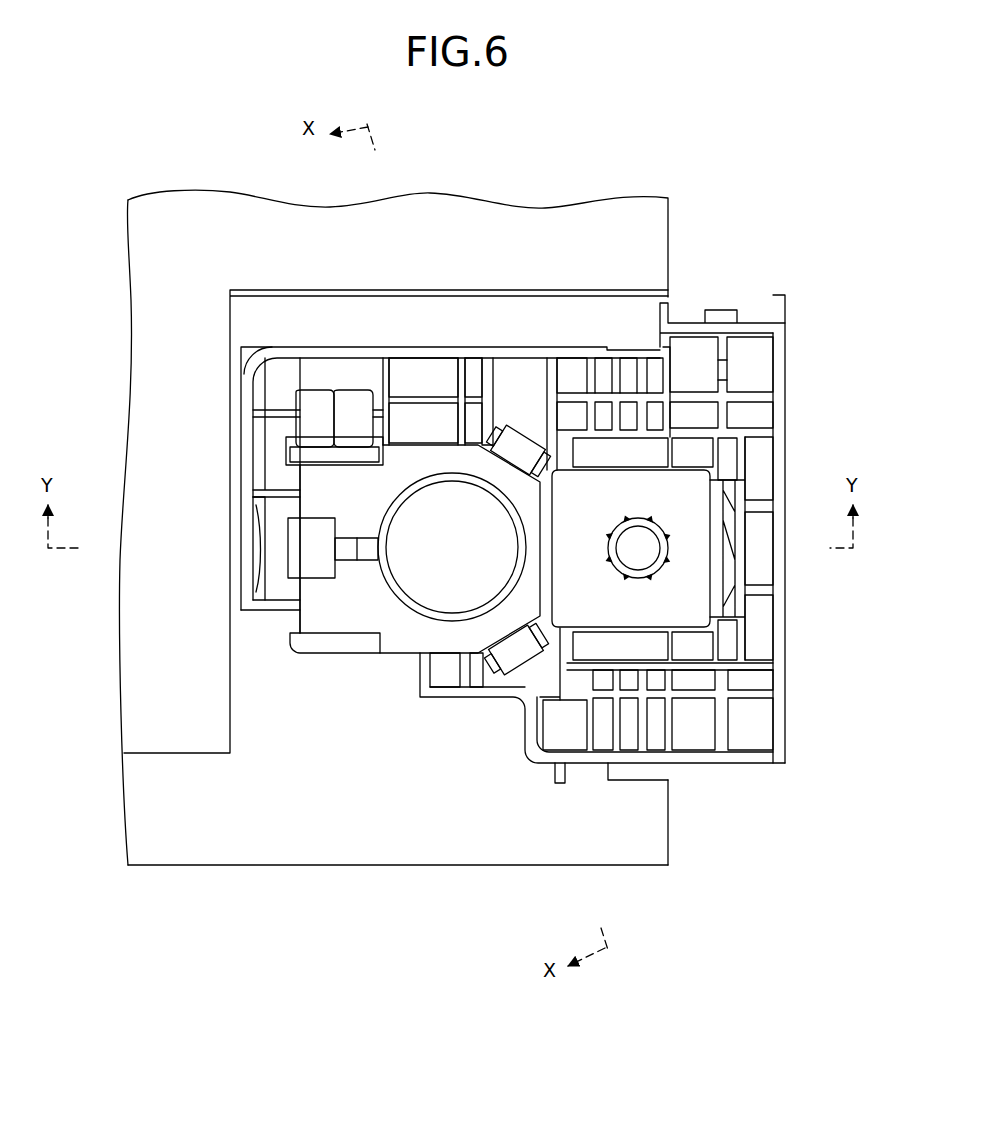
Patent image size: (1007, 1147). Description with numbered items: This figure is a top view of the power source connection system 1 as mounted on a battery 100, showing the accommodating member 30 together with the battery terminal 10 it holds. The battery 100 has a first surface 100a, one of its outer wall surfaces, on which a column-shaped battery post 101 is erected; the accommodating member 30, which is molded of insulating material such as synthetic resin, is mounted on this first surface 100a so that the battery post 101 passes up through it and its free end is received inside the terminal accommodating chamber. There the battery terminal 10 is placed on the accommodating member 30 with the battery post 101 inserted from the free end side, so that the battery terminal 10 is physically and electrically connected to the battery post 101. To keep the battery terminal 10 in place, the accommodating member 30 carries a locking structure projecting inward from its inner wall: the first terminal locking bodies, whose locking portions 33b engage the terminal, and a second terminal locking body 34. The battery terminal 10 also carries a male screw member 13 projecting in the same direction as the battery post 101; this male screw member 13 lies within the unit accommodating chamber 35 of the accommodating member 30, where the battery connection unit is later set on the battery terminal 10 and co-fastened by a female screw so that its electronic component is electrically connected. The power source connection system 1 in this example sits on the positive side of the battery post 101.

The battery 100 is at (178, 172).
The first surface 100a is at (168, 853).
The power source connection system 1 is at (724, 262).
The accommodating member 30 is at (787, 322).
The unit accommodating chamber 35 is at (752, 380).
The male screw member 13 is at (640, 548).
The second terminal locking body 34 is at (290, 548).
The holding portion of guide 33 33b is at (520, 432).
The battery terminal 10 is at (383, 657).
The battery post 101 is at (450, 548).